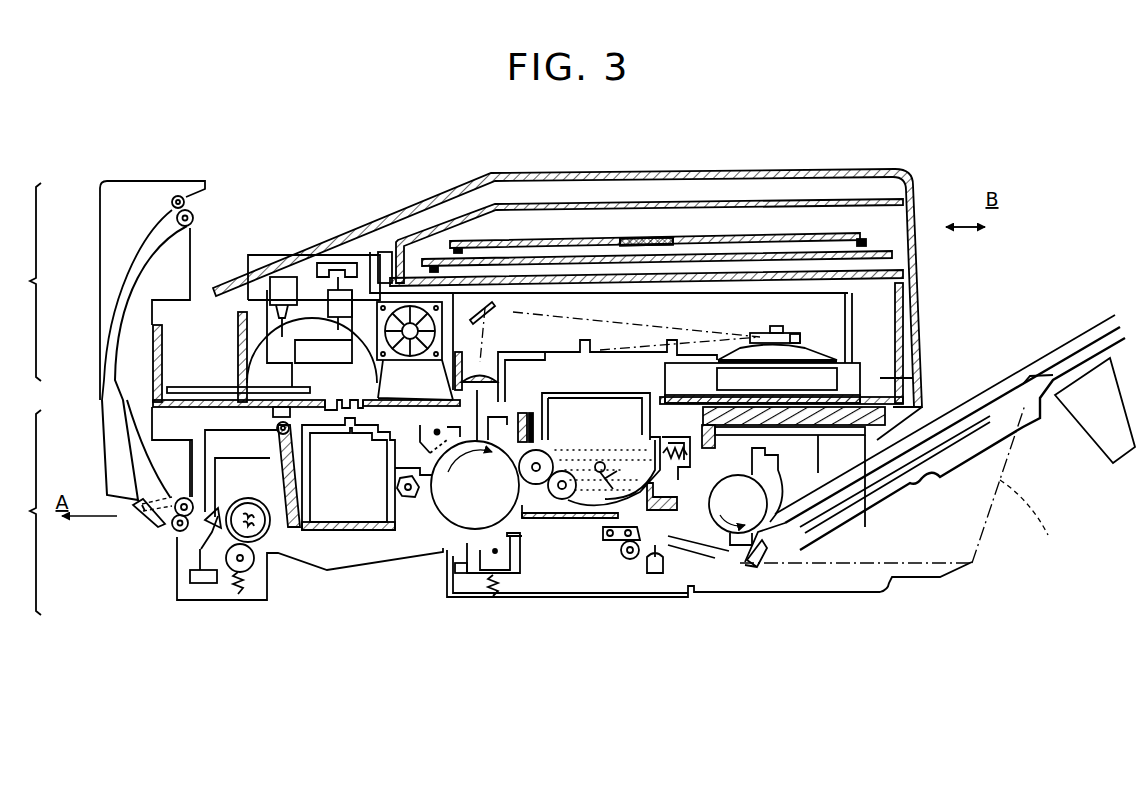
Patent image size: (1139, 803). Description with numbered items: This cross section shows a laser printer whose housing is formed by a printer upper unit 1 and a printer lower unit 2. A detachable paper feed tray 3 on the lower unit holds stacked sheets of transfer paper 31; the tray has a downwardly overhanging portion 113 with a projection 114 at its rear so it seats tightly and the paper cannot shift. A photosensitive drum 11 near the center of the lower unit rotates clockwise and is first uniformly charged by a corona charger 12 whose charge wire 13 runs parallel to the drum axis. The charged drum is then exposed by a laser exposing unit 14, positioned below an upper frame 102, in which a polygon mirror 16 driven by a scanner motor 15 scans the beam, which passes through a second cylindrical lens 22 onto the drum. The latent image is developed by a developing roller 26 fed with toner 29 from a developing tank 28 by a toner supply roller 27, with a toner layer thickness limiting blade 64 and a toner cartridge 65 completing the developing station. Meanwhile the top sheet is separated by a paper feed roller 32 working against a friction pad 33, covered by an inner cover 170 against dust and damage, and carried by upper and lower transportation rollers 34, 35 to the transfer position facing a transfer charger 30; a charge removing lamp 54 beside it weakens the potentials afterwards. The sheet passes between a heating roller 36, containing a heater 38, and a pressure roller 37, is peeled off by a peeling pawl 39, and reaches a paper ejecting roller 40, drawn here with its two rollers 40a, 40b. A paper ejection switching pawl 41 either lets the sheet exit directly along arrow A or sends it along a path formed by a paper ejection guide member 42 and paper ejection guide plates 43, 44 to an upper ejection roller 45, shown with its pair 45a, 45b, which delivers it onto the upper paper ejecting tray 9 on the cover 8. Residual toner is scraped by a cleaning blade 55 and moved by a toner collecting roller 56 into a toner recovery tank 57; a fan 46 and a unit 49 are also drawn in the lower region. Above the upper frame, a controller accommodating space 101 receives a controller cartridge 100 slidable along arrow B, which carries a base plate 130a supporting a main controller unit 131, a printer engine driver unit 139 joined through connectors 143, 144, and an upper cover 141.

The printer upper unit 1 is at (26, 282).
The printer lower unit 2 is at (25, 512).
The paper feed tray 3 is at (1028, 338).
The cover 8 is at (677, 174).
The upper paper ejecting tray 9 is at (327, 240).
The photosensitive drum 11 is at (470, 507).
The corona charger 12 is at (393, 470).
The charge wire 13 is at (436, 431).
The laser exposing unit 14 is at (728, 320).
The scanner motor 15 is at (717, 380).
The polygon mirror 16 is at (800, 340).
The second cylindrical lens 22 is at (483, 374).
The developing roller 26 is at (543, 482).
The toner supply roller 27 is at (570, 498).
The developing tank 28 is at (633, 448).
The toner 29 is at (607, 470).
The transfer charger 30 is at (510, 565).
The stacked sheets of transfer paper 31 is at (1023, 372).
The paper feed roller 32 is at (731, 486).
The friction pad 33 is at (740, 560).
The upper transportation roller 34 is at (624, 559).
The lower transportation roller 35 is at (638, 570).
The heating roller 36 is at (230, 500).
The pressure roller 37 is at (246, 568).
The heater 38 is at (253, 527).
The peeling pawl 39 is at (226, 556).
The paper ejecting roller 40 is at (163, 542).
The discharge roller 40a is at (170, 498).
The discharge pinch roller 40b is at (173, 527).
The paper ejection switching pawl 41 is at (143, 522).
The paper ejection guide member 42 is at (172, 270).
The paper ejection guide plate 43 is at (108, 258).
The paper ejection guide plate 44 is at (107, 438).
The upper ejection roller 45 is at (205, 199).
The exit roller 45a is at (194, 217).
The exit pinch roller 45b is at (178, 195).
The cooling fan 46 is at (407, 335).
The power supply unit 49 is at (240, 297).
The charge removing lamp 54 is at (458, 583).
The cleaning blade 55 is at (418, 497).
The toner collecting roller 56 is at (398, 497).
The toner recovery tank 57 is at (348, 474).
The toner layer thickness limiting blade 64 is at (545, 440).
The toner cartridge 65 is at (620, 400).
The controller cartridge 100 is at (915, 206).
The controller accommodating space 101 is at (847, 184).
The upper frame 102 is at (684, 287).
The overhanging portion 113 is at (900, 484).
The projection 114 is at (1098, 428).
The base plate 130a is at (904, 272).
The main controller unit 131 is at (893, 249).
The printer engine driver unit 139 is at (470, 240).
The upper cover 141 is at (613, 205).
The connector 143 is at (660, 238).
The connector 144 is at (690, 210).
The inner cover 170 is at (905, 380).